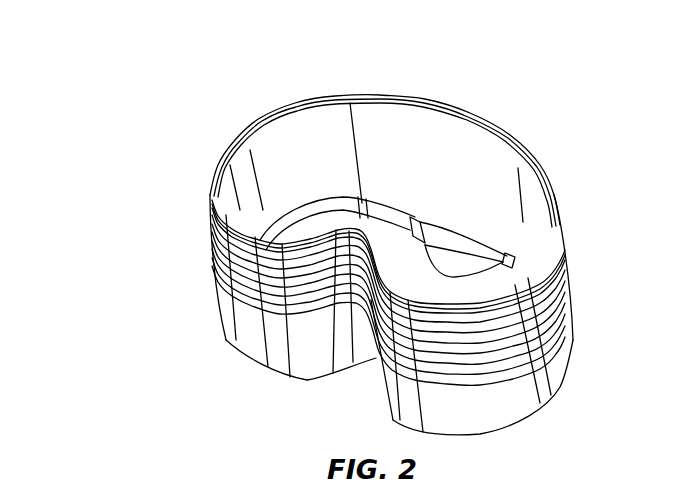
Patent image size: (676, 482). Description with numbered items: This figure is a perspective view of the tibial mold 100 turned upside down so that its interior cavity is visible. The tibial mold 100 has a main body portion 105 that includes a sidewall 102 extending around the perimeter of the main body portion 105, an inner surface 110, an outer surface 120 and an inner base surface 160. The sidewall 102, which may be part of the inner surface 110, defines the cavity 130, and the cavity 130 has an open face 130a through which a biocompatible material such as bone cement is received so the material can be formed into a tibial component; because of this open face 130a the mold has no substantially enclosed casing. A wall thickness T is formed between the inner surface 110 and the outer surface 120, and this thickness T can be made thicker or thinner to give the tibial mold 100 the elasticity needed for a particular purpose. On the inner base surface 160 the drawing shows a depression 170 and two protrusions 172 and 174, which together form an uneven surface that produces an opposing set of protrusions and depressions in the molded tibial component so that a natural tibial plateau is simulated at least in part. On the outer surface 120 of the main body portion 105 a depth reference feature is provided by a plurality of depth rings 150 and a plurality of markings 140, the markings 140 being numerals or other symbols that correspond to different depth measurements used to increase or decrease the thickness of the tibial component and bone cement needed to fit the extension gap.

The tibial mold 100 is at (192, 136).
The sidewall 102 is at (391, 103).
The main body portion 105 is at (507, 397).
The inner surface 110 is at (327, 128).
The outer surface 120 is at (250, 327).
The cavity 130 is at (474, 226).
The open face 130a is at (493, 152).
The markings 140 is at (541, 340).
The depth rings 150 is at (565, 308).
The inner base surface 160 is at (378, 234).
The depression 170 is at (405, 272).
The protrusion 172 is at (505, 257).
The protrusion 174 is at (290, 207).
The thickness T is at (453, 168).